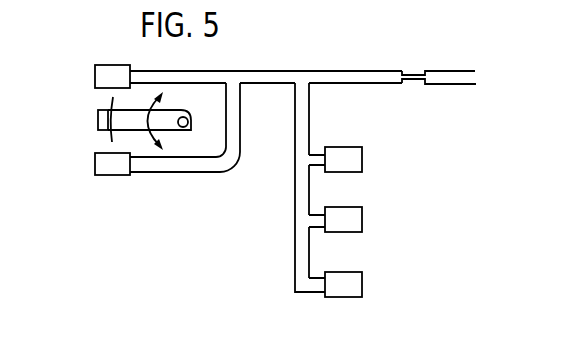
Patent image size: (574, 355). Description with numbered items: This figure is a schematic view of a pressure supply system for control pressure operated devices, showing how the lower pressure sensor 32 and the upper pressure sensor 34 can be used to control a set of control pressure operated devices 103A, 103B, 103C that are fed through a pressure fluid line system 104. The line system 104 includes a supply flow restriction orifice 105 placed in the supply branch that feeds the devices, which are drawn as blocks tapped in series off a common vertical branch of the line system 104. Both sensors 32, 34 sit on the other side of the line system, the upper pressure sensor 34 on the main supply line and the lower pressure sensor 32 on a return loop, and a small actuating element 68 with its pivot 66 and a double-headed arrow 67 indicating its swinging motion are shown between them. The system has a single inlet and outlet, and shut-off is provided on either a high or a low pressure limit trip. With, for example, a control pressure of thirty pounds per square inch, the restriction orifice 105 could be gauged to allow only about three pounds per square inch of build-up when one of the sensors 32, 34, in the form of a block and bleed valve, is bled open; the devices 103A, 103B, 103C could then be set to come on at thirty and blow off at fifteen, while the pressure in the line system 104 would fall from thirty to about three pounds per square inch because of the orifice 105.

The lower pressure sensor 32 is at (120, 175).
The upper pressure sensor 34 is at (112, 65).
The pivot 66 is at (187, 125).
The rotation arrow 67 is at (138, 133).
The lever 68 is at (108, 143).
The control pressure operated device 103A is at (363, 158).
The control pressure operated device 103B is at (363, 220).
The control pressure operated device 103C is at (363, 285).
The pressure fluid line system 104 is at (362, 71).
The supply flow restriction orifice 105 is at (410, 74).